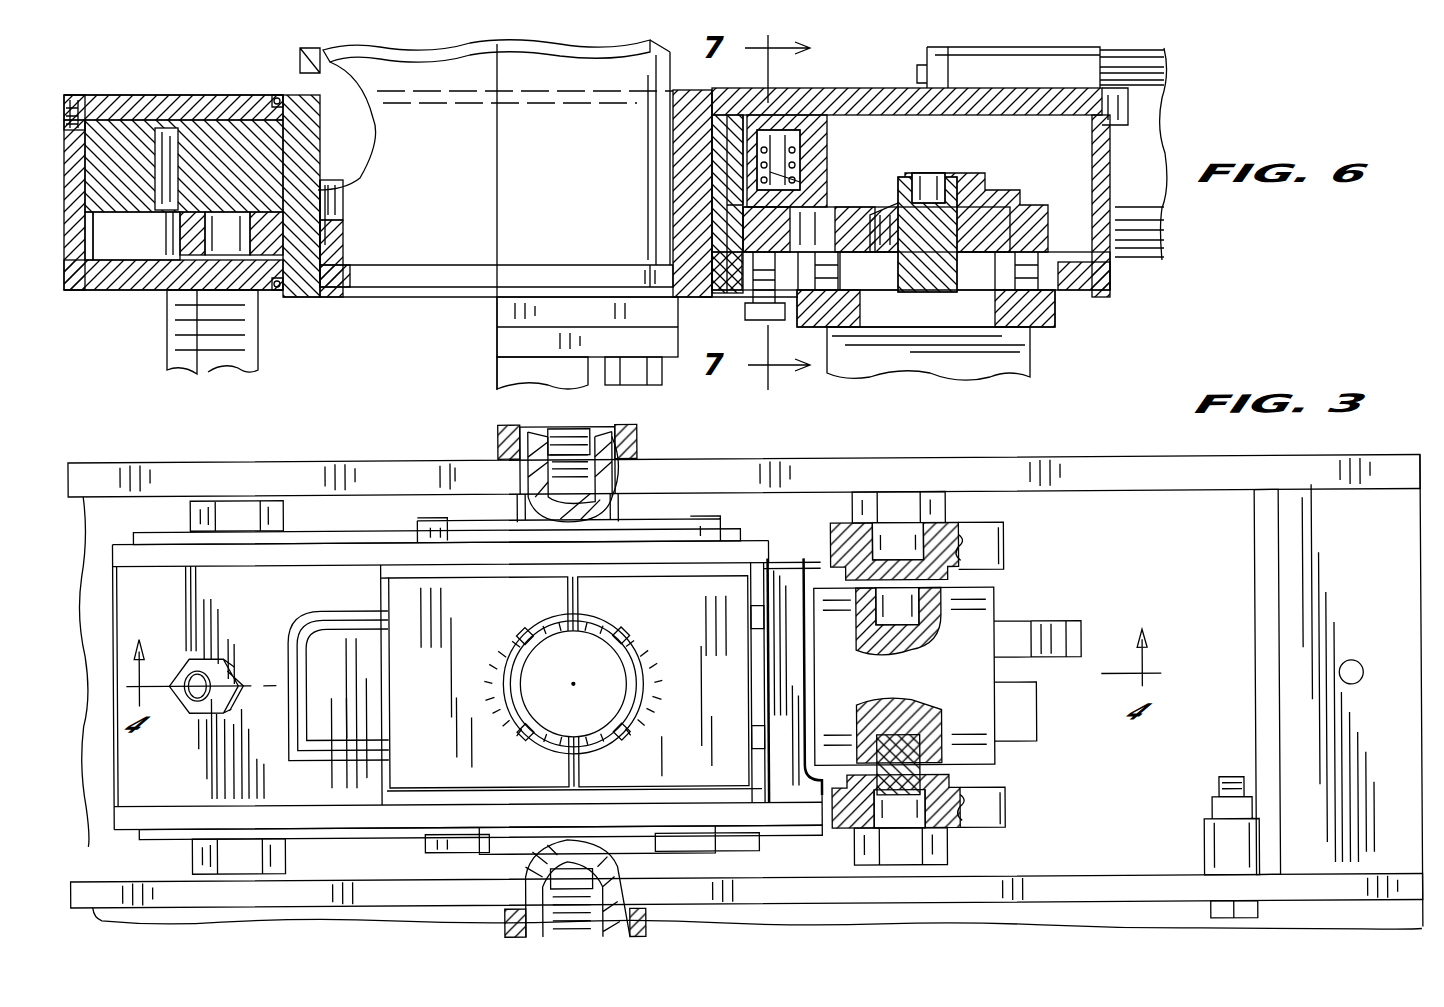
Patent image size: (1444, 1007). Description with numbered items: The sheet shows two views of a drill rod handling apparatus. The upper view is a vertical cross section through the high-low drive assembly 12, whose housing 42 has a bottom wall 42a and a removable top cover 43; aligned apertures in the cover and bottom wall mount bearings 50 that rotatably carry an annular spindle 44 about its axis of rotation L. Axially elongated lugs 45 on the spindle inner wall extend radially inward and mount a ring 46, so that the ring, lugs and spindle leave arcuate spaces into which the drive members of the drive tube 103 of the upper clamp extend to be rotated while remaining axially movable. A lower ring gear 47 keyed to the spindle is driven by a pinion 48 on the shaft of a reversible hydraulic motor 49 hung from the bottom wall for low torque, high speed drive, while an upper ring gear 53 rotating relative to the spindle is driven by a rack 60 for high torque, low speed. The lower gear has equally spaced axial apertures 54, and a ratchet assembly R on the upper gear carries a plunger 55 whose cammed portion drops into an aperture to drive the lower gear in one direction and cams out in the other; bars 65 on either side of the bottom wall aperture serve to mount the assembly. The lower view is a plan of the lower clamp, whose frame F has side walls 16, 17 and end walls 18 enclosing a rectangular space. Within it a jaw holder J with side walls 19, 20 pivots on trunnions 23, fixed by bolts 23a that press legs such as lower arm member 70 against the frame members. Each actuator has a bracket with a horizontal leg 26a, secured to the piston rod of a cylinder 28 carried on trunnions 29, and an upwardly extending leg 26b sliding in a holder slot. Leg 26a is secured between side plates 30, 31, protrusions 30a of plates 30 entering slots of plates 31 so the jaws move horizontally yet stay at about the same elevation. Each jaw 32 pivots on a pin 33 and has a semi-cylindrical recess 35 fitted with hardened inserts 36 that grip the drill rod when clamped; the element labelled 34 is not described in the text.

In FIG. 6, the high-low drive assembly 12 is at (68, 314).
In FIG. 6, the housing 42 is at (135, 270).
In FIG. 6, the bottom wall 42a is at (158, 272).
In FIG. 6, the removable top cover 43 is at (112, 112).
In FIG. 6, the annular spindle 44 is at (290, 168).
In FIG. 6, the lugs 45 is at (690, 170).
In FIG. 6, the ring 46 is at (330, 270).
In FIG. 6, the lower ring gear 47 is at (270, 232).
In FIG. 6, the pinion 48 is at (1000, 215).
In FIG. 6, the hydraulic motor 49 is at (1035, 347).
In FIG. 6, the bearing 50 is at (275, 92).
In FIG. 6, the upper ring gear 53 is at (255, 150).
In FIG. 6, the axial apertures 54 is at (200, 232).
In FIG. 6, the plunger 55 is at (775, 160).
In FIG. 6, the rack 60 is at (130, 190).
In FIG. 6, the bars 65 is at (515, 315).
In FIG. 6, the drive tube 103 is at (335, 196).
In FIG. 6, the axis of rotation L is at (500, 82).
In FIG. 6, the ratchet assembly R is at (795, 185).
In FIG. 3, the frame side wall 16 is at (1085, 915).
In FIG. 3, the frame side wall 17 is at (1160, 470).
In FIG. 3, the end walls 18 is at (1268, 568).
In FIG. 3, the jaw holder side wall 19 is at (993, 810).
In FIG. 3, the jaw holder side wall 20 is at (990, 552).
In FIG. 3, the trunnions 23 is at (595, 440).
In FIG. 3, the bolts 23a is at (640, 445).
In FIG. 3, the horizontally extending leg 26a is at (178, 599).
In FIG. 3, the upwardly extending leg 26b is at (365, 788).
In FIG. 3, the cylinder 28 is at (968, 700).
In FIG. 3, the trunnions 29 is at (240, 500).
In FIG. 3, the side plate 30 is at (225, 560).
In FIG. 3, the protrusions 30a is at (520, 810).
In FIG. 3, the side plate 31 is at (760, 550).
In FIG. 3, the jaw 32 is at (426, 708).
In FIG. 3, the pin 33 is at (720, 527).
In FIG. 3, the channel bracket 34 is at (310, 628).
In FIG. 3, the semi-cylindrical recesses 35 is at (495, 678).
In FIG. 3, the hardened inserts 36 is at (522, 638).
In FIG. 3, the lower arm member 70 is at (498, 440).
In FIG. 3, the frame F is at (1165, 488).
In FIG. 3, the jaw holder J is at (800, 825).